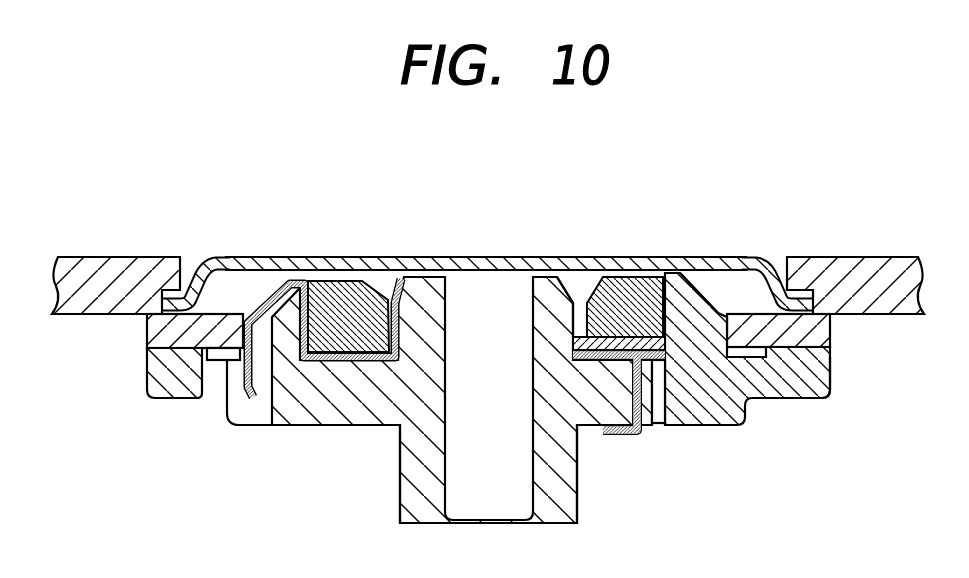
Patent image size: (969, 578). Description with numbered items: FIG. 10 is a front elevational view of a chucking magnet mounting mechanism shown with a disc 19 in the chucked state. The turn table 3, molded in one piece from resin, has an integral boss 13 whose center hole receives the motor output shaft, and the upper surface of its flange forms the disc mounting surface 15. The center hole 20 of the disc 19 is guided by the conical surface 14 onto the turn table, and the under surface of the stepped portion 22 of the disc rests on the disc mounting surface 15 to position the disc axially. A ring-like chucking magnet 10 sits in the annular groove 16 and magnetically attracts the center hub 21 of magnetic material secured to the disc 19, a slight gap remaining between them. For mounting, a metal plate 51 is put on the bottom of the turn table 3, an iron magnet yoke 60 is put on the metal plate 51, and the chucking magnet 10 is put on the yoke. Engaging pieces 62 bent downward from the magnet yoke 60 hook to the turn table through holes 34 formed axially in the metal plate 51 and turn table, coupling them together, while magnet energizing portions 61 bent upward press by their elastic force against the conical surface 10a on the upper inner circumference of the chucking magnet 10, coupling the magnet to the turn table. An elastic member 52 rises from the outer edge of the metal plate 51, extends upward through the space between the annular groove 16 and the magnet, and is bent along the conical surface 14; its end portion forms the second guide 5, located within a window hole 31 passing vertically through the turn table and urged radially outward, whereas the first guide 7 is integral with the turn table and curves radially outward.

The turn table 3 is at (808, 396).
The second guide 5 is at (227, 392).
The first guide 7 is at (747, 401).
The chucking magnet 10 is at (337, 270).
The conical surface 10a is at (373, 275).
The boss 13 is at (572, 497).
The conical surface 14 is at (693, 268).
The disc mounting surface 15 is at (178, 336).
The annular groove 16 is at (643, 270).
The disc 19 is at (852, 268).
The center hole 20 is at (718, 313).
The center hub 21 is at (758, 262).
The stepped portion 22 is at (831, 328).
The window hole 31 is at (254, 385).
The holes 34 is at (660, 426).
The metal plate 51 is at (332, 360).
The elastic member 52 is at (266, 302).
The magnet yoke 60 is at (378, 372).
The magnet energizing means 61 is at (385, 292).
The engaging pieces 62 is at (618, 437).